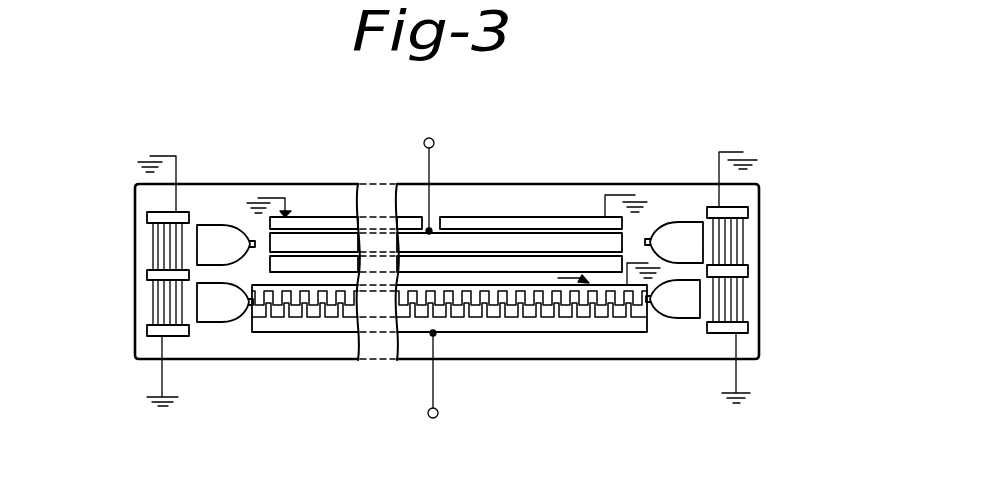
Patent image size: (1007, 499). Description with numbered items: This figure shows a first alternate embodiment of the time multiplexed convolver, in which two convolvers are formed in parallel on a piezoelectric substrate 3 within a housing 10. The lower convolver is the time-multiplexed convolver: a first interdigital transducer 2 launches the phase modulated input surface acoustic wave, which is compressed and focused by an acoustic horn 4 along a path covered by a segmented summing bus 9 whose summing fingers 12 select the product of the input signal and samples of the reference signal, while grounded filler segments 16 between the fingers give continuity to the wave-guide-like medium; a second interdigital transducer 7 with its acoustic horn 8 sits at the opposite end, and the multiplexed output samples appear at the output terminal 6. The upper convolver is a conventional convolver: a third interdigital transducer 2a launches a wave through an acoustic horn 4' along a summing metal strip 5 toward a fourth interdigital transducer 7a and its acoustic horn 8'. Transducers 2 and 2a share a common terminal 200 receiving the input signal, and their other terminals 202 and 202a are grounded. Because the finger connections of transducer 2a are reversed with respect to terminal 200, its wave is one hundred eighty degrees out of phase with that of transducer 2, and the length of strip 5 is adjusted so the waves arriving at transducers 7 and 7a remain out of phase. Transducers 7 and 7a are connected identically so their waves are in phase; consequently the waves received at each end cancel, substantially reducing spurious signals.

The first interdigital transducer 2 is at (145, 312).
The third interdigital transducer 2a is at (145, 250).
The piezoelectric substrate 3 is at (587, 343).
The acoustic horn 4 is at (225, 367).
The acoustic horn 4' is at (244, 184).
The summing metal strip 5 is at (507, 231).
The output terminal 6 is at (433, 138).
The second interdigital transducer 7 is at (750, 304).
The fourth interdigital transducer 7a is at (748, 238).
The acoustic horn 8 is at (673, 367).
The acoustic horn 8' is at (675, 188).
The segmented summing bus 9 is at (310, 323).
The housing 10 is at (637, 184).
The summing fingers 12 is at (353, 318).
The filler segments 16 is at (527, 302).
The common terminal 200 is at (145, 278).
The terminal 202 is at (150, 334).
The terminal 202a is at (162, 214).